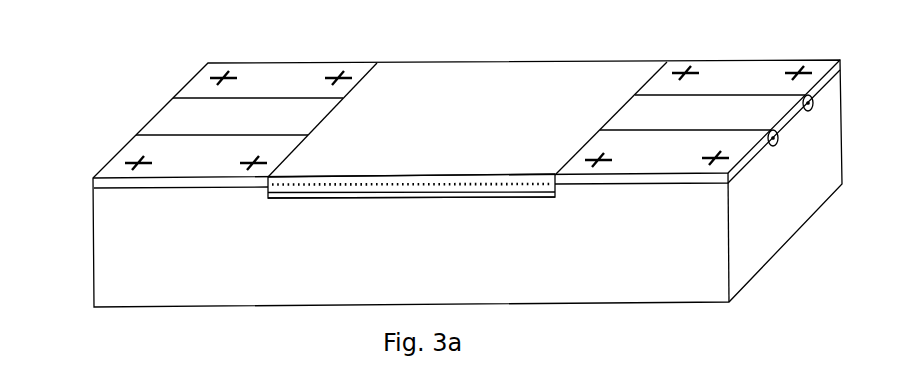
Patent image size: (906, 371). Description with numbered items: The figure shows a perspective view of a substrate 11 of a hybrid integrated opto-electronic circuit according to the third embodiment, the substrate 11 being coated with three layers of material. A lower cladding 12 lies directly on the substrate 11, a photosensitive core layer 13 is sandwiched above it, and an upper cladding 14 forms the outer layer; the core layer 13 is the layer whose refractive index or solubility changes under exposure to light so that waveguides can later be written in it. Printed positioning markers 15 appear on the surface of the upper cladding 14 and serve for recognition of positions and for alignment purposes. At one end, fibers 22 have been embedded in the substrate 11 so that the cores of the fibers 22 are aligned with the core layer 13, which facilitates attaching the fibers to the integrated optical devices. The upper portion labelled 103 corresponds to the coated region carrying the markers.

The substrate 11 is at (541, 277).
The lower cladding 12 is at (435, 198).
The core layer 13 is at (357, 187).
The upper cladding 14 is at (280, 182).
The positioning markers 15 is at (327, 78).
The fibers 22 is at (808, 111).
The electrode panel region 103 is at (152, 118).